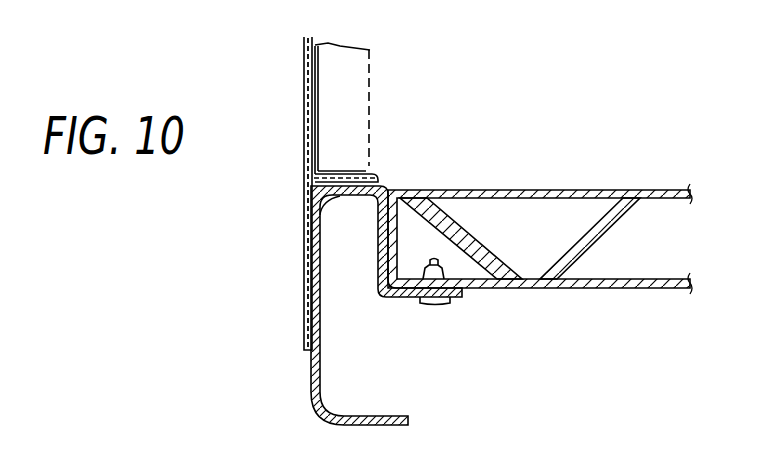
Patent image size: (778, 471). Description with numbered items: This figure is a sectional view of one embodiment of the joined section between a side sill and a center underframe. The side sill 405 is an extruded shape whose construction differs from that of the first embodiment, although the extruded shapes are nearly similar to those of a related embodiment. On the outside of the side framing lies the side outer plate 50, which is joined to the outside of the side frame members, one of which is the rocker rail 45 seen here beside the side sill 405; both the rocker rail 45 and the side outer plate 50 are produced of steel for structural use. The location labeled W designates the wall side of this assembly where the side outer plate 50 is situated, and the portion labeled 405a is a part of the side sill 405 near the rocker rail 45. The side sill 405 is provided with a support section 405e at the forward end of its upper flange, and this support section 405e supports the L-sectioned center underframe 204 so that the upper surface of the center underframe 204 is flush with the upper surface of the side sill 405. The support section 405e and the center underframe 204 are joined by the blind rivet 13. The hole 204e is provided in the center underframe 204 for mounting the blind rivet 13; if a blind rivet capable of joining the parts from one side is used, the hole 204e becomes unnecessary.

The side outer plate 50 is at (304, 98).
The rocker rail 45 is at (372, 152).
The wall W is at (300, 316).
The side sill 405 is at (334, 305).
The bracket flange 405a is at (318, 212).
The support section 405e is at (367, 325).
The center underframe 204 is at (540, 211).
The hole 204e is at (418, 192).
The blind rivet 13 is at (437, 304).